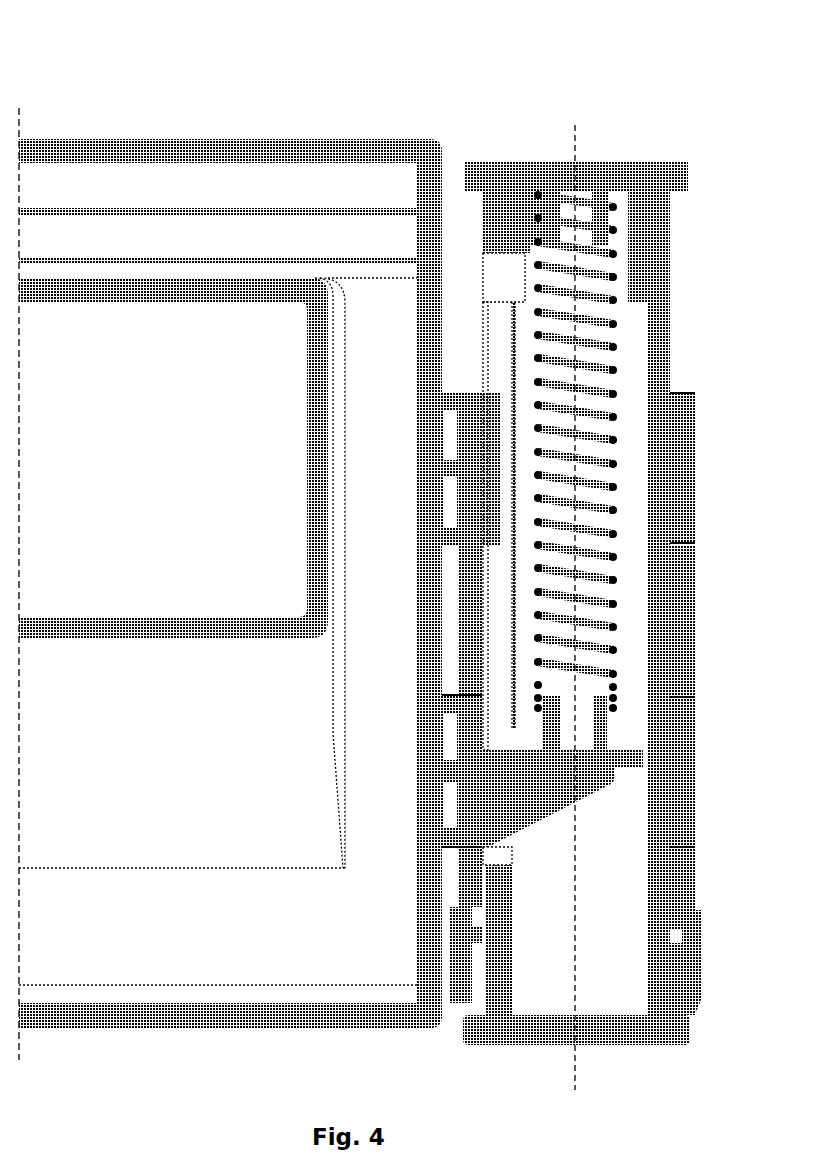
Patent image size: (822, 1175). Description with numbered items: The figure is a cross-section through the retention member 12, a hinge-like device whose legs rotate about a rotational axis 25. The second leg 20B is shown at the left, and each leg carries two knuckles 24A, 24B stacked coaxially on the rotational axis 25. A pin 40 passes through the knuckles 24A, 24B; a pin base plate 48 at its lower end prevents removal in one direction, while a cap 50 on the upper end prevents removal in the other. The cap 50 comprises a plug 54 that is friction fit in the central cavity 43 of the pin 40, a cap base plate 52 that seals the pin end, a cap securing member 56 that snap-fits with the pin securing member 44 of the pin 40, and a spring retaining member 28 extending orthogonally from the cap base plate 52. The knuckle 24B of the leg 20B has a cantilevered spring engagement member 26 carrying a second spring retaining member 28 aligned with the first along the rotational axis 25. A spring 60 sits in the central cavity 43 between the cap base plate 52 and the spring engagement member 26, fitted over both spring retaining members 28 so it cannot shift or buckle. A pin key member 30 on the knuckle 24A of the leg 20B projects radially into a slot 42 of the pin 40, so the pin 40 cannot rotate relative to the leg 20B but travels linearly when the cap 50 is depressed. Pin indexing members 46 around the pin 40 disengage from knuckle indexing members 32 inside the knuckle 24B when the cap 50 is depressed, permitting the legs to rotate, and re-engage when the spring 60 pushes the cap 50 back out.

The retention member 12 is at (497, 67).
The second leg 20B is at (287, 131).
The rotational axis 25 is at (578, 594).
The spring engagement member 26 is at (592, 790).
The spring retaining member 28 is at (548, 207).
The pin key member 30 is at (488, 476).
The knuckle indexing member 32 is at (678, 936).
The pin 40 is at (668, 302).
The slot 42 is at (498, 363).
The central cavity 43 is at (625, 332).
The pin securing member 44 is at (498, 302).
The pin indexing member 46 is at (672, 965).
The pin base plate 48 is at (640, 1040).
The cap 50 is at (641, 213).
The cap base plate 52 is at (612, 162).
The plug 54 is at (635, 258).
The cap securing member 56 is at (500, 277).
The spring 60 is at (583, 380).
The knuckle 24A is at (687, 480).
The knuckle 24B is at (682, 790).